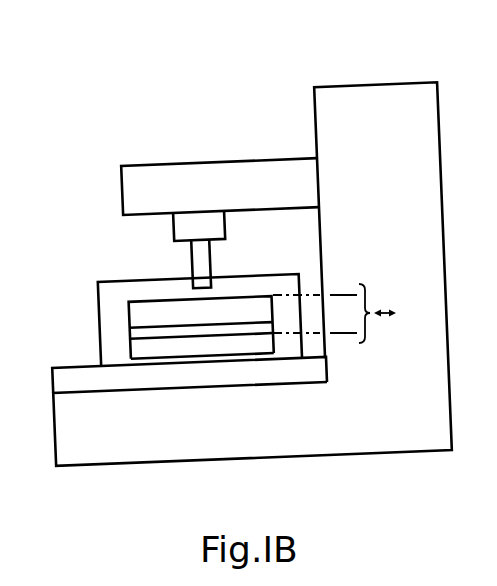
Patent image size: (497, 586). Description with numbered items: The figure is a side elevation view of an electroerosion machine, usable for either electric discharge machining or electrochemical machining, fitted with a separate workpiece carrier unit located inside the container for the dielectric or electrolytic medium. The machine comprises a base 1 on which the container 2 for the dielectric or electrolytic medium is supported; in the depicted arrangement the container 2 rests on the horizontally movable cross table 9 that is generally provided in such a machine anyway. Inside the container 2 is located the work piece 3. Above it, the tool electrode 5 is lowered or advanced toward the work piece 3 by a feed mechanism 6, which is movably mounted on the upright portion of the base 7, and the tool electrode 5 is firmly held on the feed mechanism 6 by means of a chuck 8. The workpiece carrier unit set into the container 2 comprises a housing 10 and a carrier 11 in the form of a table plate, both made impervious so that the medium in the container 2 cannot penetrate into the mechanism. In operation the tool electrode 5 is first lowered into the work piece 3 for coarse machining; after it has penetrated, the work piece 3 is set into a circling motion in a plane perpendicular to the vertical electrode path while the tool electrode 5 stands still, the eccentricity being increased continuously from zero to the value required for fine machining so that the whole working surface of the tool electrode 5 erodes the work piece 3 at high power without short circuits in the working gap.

The base 1 is at (73, 455).
The container 2 is at (100, 290).
The work piece 3 is at (143, 310).
The tool electrode 5 is at (207, 258).
The feed mechanism 6 is at (160, 180).
The upright portion of the base 7 is at (333, 100).
The chuck 8 is at (178, 232).
The cross table 9 is at (62, 383).
The housing 10 is at (133, 355).
The carrier 11 is at (133, 332).